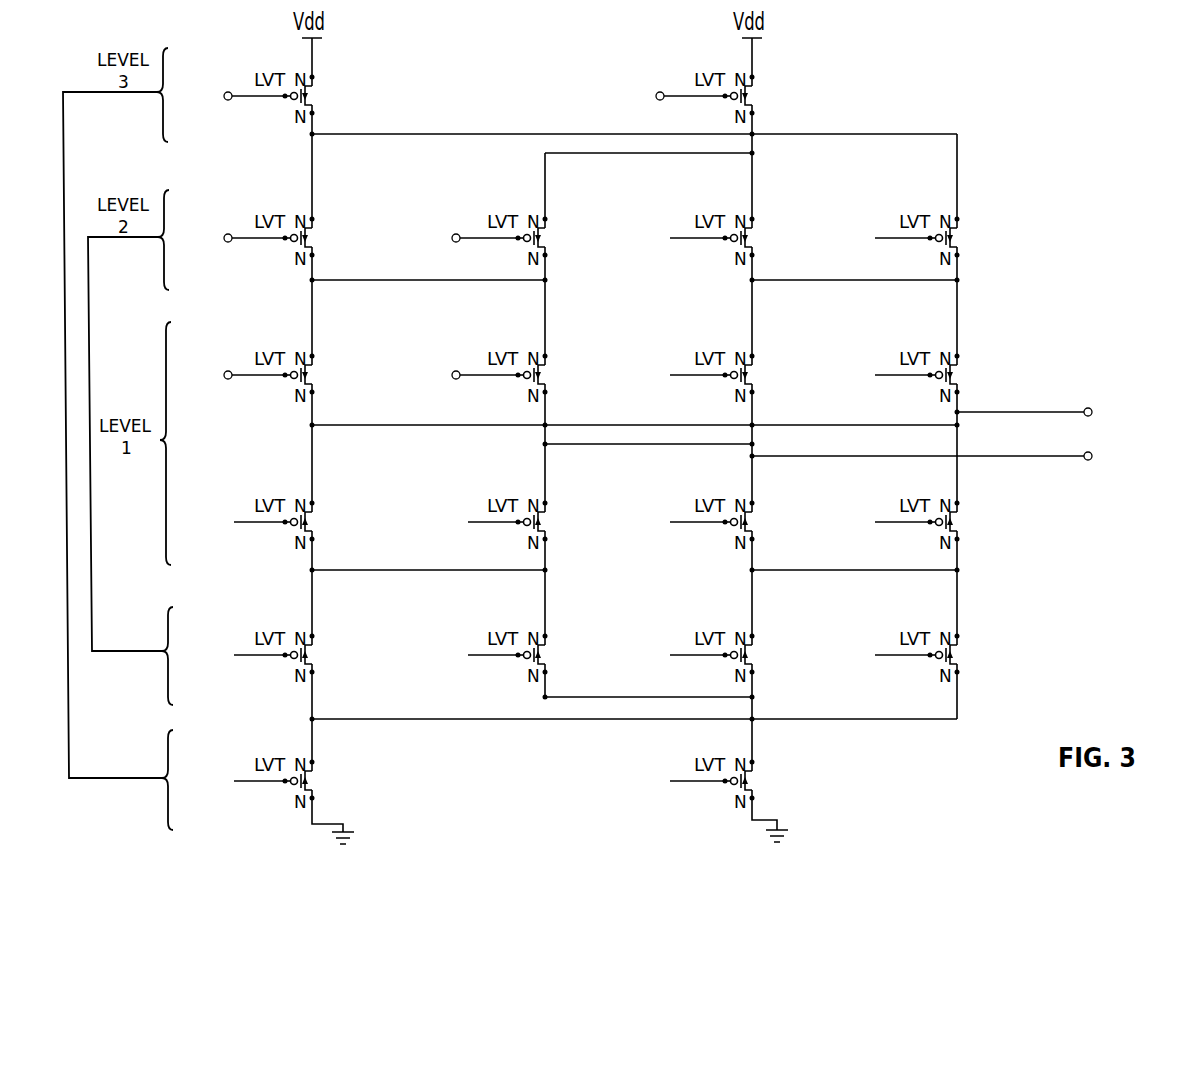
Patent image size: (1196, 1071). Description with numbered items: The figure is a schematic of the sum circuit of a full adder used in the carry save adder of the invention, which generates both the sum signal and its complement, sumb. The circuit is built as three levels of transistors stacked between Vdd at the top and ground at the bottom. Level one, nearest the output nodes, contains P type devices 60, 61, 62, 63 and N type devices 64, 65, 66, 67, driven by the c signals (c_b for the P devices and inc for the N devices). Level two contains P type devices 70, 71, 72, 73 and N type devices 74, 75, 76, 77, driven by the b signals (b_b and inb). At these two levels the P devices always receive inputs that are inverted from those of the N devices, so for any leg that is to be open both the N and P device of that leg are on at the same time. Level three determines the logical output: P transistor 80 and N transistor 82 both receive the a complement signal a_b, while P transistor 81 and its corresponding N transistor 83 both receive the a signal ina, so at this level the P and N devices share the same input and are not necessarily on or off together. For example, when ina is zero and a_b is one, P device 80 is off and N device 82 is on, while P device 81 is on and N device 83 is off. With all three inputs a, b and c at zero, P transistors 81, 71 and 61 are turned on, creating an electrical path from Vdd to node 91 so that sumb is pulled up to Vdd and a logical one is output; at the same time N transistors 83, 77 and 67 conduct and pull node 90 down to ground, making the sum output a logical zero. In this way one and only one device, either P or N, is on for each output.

The P type device 60 is at (285, 344).
The P type device 61 is at (518, 344).
The P type device 62 is at (725, 344).
The P type device 63 is at (930, 344).
The N type device 64 is at (285, 491).
The N type device 65 is at (518, 491).
The N type device 66 is at (762, 545).
The N type device 67 is at (967, 545).
The P type device 70 is at (285, 207).
The P type device 71 is at (518, 207).
The P type device 72 is at (725, 207).
The P type device 73 is at (930, 207).
The N type device 74 is at (285, 624).
The N type device 75 is at (518, 624).
The N type device 76 is at (725, 624).
The N type device 77 is at (930, 624).
The P transistor 80 is at (285, 65).
The P transistor 81 is at (725, 65).
The N transistor 82 is at (285, 750).
The N transistor 83 is at (775, 788).
The node 90 is at (1040, 412).
The node 91 is at (1040, 456).